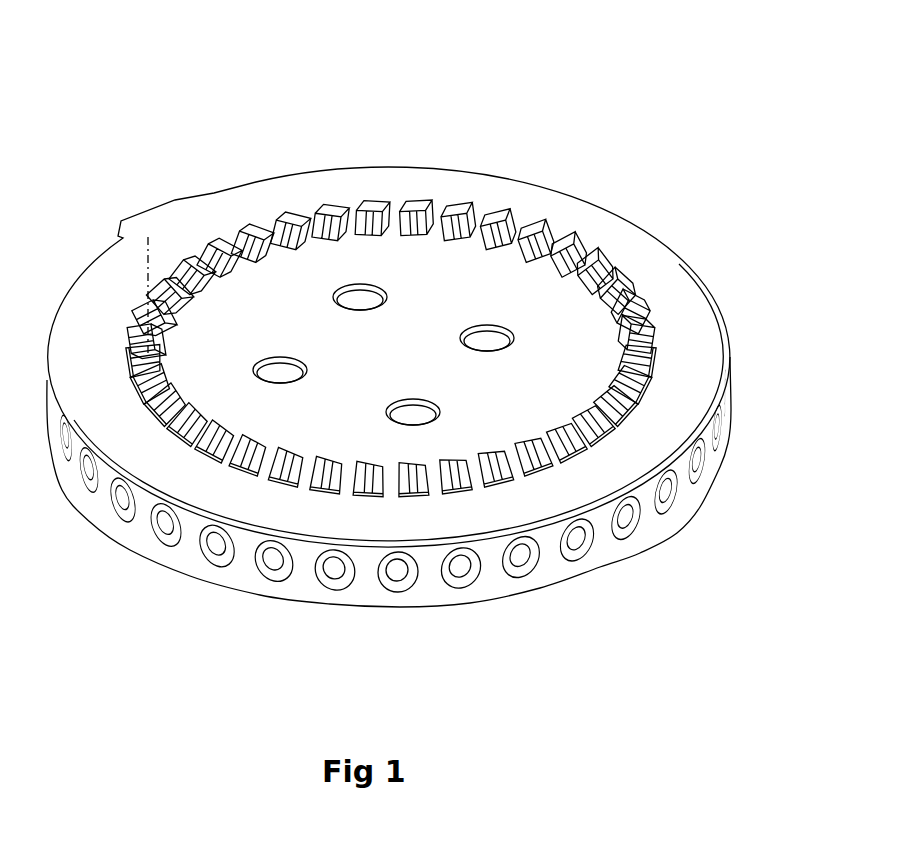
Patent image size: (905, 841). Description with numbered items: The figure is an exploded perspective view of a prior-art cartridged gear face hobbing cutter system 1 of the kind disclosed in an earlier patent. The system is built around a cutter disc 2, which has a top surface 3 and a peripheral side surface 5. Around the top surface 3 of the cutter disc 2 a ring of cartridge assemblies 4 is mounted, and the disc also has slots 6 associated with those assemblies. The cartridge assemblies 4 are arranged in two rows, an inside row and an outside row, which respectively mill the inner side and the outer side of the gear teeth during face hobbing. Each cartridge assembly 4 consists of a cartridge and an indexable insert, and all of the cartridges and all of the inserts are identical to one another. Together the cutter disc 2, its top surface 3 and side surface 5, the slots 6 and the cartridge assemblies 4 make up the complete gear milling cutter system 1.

The gear milling cutter system 1 is at (666, 116).
The cutter disc 2 is at (668, 288).
The top surface of the cutter disc 3 is at (406, 361).
The cartridge assemblies 4 is at (652, 348).
The side surface of the cutter disc 5 is at (596, 540).
The slots 6 is at (605, 421).